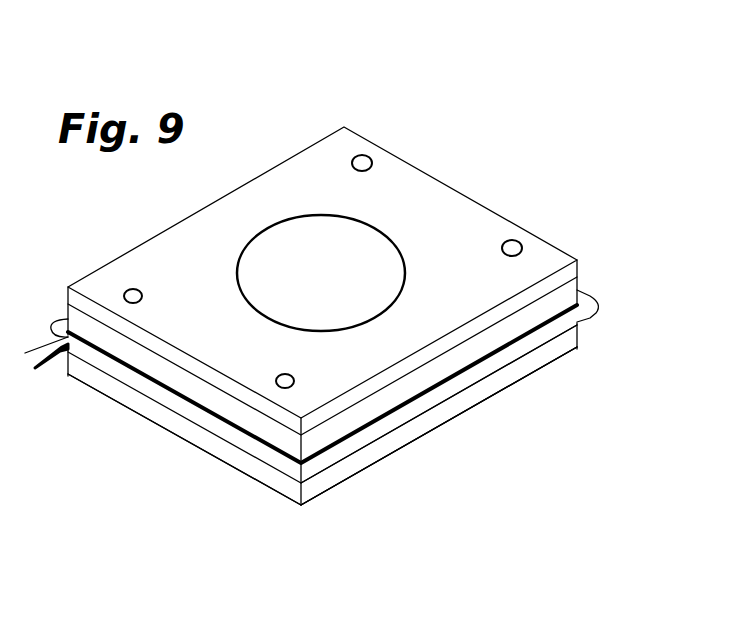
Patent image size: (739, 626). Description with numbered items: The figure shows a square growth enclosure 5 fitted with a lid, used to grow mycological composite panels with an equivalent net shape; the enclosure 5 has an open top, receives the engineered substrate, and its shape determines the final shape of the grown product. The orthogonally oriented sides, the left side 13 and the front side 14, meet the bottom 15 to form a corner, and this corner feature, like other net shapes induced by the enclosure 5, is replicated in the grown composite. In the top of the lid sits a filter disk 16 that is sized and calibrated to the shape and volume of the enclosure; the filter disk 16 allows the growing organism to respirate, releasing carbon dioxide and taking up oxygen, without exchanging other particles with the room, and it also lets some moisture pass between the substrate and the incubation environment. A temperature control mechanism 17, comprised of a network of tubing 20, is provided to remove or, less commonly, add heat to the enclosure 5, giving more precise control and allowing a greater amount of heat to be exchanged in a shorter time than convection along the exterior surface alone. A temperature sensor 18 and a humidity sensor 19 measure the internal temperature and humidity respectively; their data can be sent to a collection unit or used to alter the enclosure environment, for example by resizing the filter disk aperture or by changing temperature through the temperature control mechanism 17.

The left side 13 is at (110, 240).
The filter disk 16 is at (290, 240).
The temperature control mechanism 17 is at (126, 295).
The temperature sensor 18 is at (365, 158).
The humidity sensor 19 is at (514, 242).
The network of tubing 20 is at (570, 320).
The front side 14 is at (160, 436).
The enclosure 5 is at (467, 403).
The bottom 15 is at (377, 491).